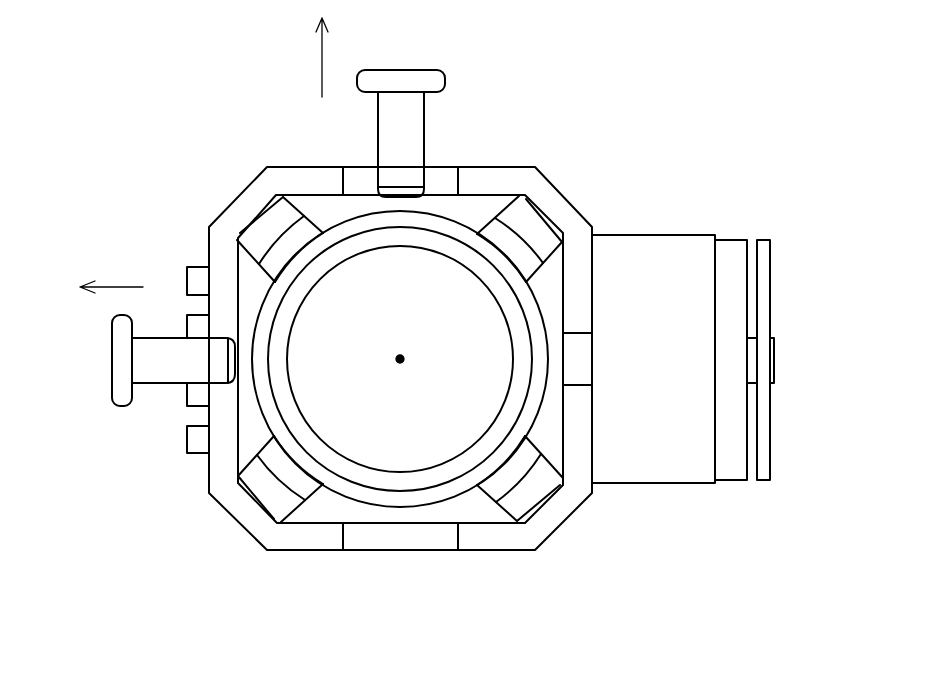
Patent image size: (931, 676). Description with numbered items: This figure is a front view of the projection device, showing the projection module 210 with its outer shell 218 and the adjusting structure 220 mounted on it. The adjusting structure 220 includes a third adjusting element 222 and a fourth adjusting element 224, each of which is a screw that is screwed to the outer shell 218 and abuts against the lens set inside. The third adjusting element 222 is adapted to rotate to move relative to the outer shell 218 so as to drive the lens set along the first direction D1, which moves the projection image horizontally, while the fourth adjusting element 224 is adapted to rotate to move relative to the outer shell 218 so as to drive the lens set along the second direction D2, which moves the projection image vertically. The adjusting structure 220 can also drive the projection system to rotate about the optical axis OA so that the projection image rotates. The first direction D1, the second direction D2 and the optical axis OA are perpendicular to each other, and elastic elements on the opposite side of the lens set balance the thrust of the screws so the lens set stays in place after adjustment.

The projection module 210 is at (622, 142).
The outer shell 218 is at (560, 513).
The adjusting structure 220 is at (123, 55).
The third adjusting element 222 is at (163, 345).
The fourth adjusting element 224 is at (392, 128).
The optical axis OA is at (400, 364).
The first direction D1 is at (112, 287).
The second direction D2 is at (320, 48).